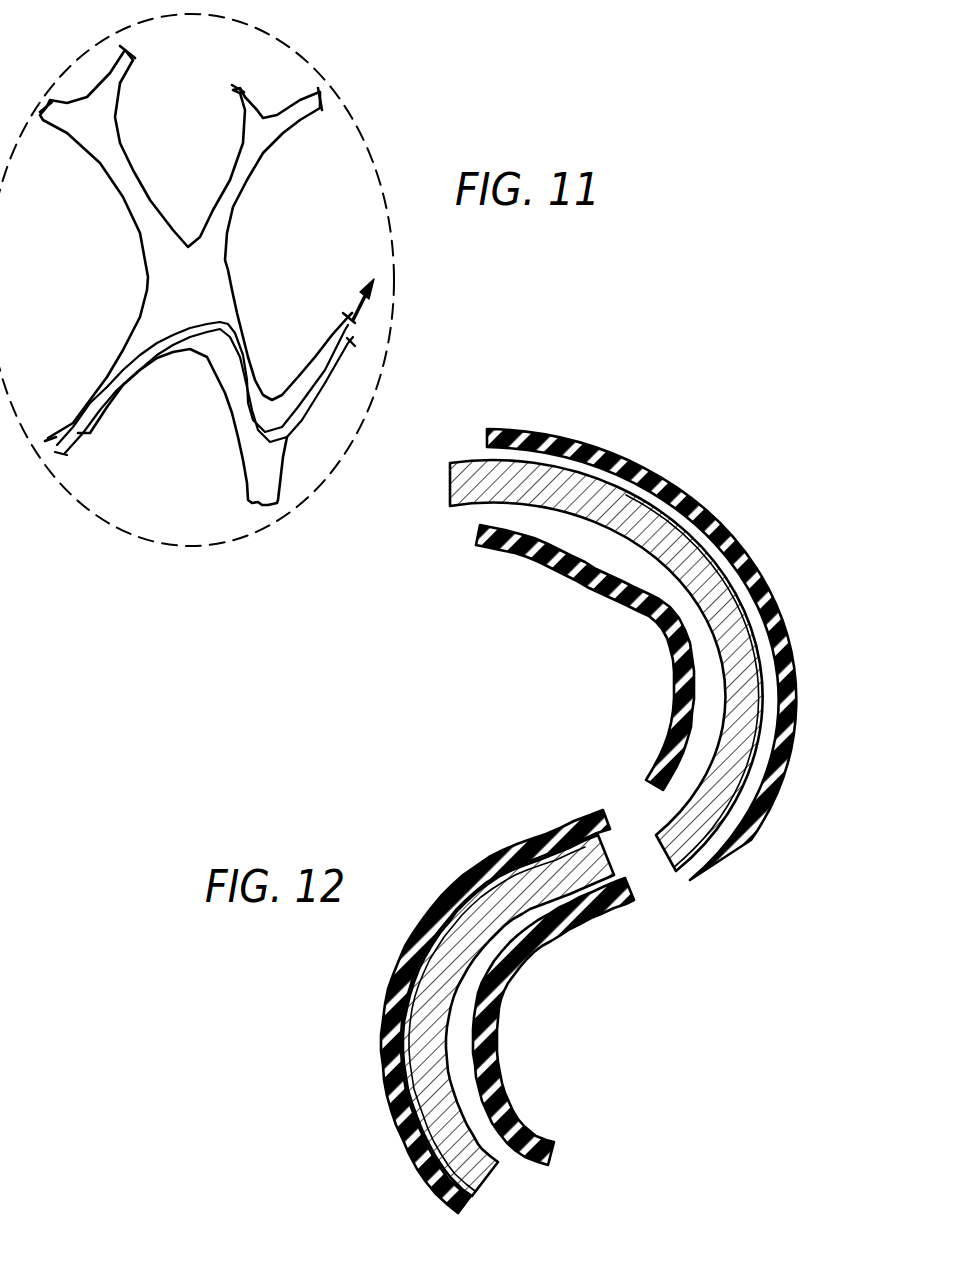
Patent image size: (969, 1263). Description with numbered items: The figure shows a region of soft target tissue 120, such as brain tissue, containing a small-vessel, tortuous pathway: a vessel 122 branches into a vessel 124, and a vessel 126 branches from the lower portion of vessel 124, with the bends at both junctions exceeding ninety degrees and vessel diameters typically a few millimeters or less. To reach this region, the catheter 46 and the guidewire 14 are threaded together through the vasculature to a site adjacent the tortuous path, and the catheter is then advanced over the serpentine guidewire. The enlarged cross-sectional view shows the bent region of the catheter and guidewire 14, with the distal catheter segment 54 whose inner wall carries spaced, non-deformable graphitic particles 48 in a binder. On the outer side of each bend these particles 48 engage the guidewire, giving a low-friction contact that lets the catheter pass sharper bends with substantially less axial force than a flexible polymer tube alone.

In FIG. 11, the soft target tissue region 120 is at (307, 77).
In FIG. 11, the vessel 124 is at (235, 303).
In FIG. 11, the vessel 122 is at (97, 433).
In FIG. 11, the catheter 46 is at (135, 367).
In FIG. 12, the catheter 46 is at (478, 855).
In FIG. 11, the vessel 126 is at (307, 408).
In FIG. 12, the particles 48 is at (606, 582).
In FIG. 12, the distal catheter segment 54 is at (778, 766).
In FIG. 12, the guidewire 14 is at (503, 1090).